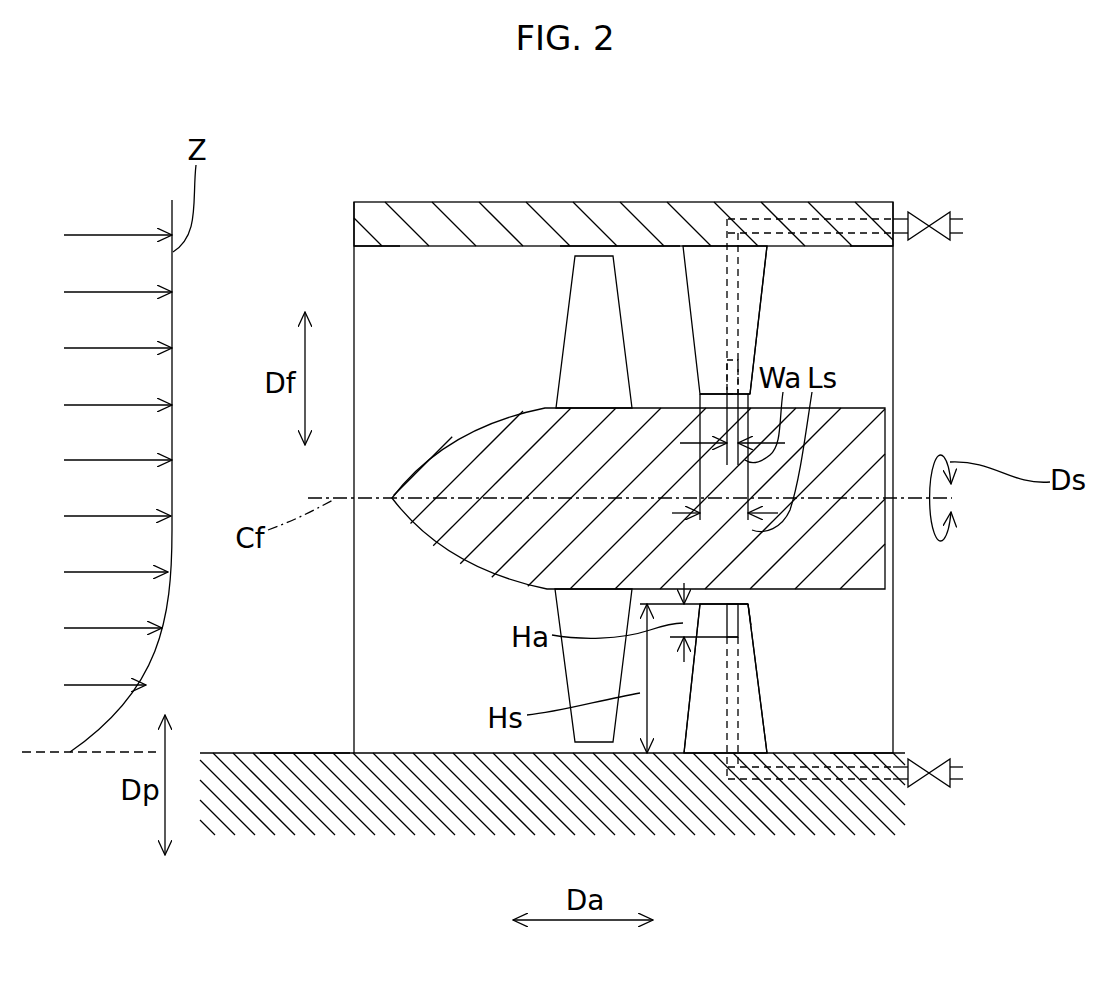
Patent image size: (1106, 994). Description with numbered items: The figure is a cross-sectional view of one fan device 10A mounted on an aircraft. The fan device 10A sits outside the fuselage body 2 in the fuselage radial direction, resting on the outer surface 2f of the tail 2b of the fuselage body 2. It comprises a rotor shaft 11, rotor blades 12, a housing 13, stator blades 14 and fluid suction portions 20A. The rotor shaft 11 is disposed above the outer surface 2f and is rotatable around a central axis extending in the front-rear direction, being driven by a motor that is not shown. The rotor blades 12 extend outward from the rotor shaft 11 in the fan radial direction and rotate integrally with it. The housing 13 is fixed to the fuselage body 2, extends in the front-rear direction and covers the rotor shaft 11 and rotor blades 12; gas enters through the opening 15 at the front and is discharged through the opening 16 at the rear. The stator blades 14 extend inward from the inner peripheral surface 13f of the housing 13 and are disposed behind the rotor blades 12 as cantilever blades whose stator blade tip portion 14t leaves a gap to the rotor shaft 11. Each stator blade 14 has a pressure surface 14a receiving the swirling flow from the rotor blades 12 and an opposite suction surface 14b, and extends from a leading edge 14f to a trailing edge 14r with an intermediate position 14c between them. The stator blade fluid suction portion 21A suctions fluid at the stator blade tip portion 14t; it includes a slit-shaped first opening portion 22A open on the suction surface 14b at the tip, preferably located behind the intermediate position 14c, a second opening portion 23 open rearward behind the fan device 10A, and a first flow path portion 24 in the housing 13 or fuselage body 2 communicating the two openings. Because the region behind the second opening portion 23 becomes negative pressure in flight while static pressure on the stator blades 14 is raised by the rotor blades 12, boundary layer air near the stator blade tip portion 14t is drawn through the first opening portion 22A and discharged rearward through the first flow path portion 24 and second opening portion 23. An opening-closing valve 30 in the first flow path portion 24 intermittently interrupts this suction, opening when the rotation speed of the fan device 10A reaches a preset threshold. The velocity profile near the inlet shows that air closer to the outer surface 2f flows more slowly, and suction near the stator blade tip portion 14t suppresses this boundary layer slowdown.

The fuselage body 2 is at (233, 750).
The outer surface 2f is at (303, 752).
The tail 2b is at (870, 753).
The fan device 10A is at (400, 198).
The rotor shaft 11 is at (838, 408).
The rotor blades 12 is at (575, 327).
The housing 13 is at (510, 200).
The inner peripheral surface 13f is at (666, 246).
The stator blades 14 is at (760, 303).
The pressure surface 14a is at (758, 330).
The suction surface 14b is at (752, 672).
The intermediate position 14c is at (748, 602).
The leading edge 14f is at (707, 602).
The trailing edge 14r is at (752, 618).
The stator blade tip portion 14t is at (717, 604).
The opening 15 is at (392, 247).
The opening 16 is at (885, 247).
The fluid suction portions 20A is at (781, 212).
The stator blade fluid suction portion 21A is at (727, 290).
The first opening portion 22A is at (733, 378).
The second opening portion 23 is at (963, 222).
The first flow path portion 24 is at (840, 218).
The opening-closing valve 30 is at (932, 214).